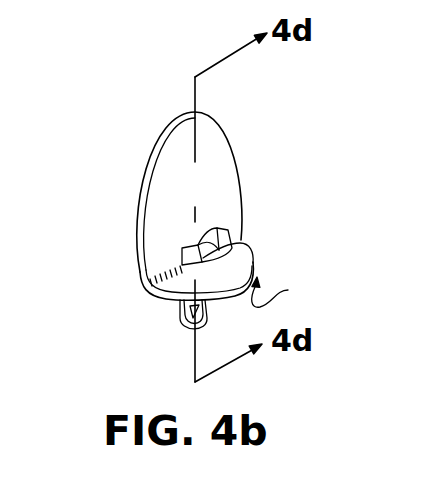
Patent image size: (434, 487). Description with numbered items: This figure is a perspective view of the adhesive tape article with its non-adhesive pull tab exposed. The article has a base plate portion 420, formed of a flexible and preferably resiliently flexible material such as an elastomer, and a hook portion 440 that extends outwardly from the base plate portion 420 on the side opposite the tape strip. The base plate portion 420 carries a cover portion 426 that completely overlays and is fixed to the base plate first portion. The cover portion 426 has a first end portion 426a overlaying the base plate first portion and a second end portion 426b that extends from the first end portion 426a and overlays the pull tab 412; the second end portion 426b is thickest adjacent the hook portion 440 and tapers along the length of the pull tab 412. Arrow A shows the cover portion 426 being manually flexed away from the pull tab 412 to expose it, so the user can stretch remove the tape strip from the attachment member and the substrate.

The base plate portion 420 is at (131, 182).
The cover portion 426 is at (132, 251).
The cover portion first end portion 426a is at (217, 162).
The cover portion second end portion 426b is at (237, 268).
The hook portion 440 is at (244, 233).
The non-adhesive pull tab 412 is at (183, 335).
The arrow A is at (279, 291).